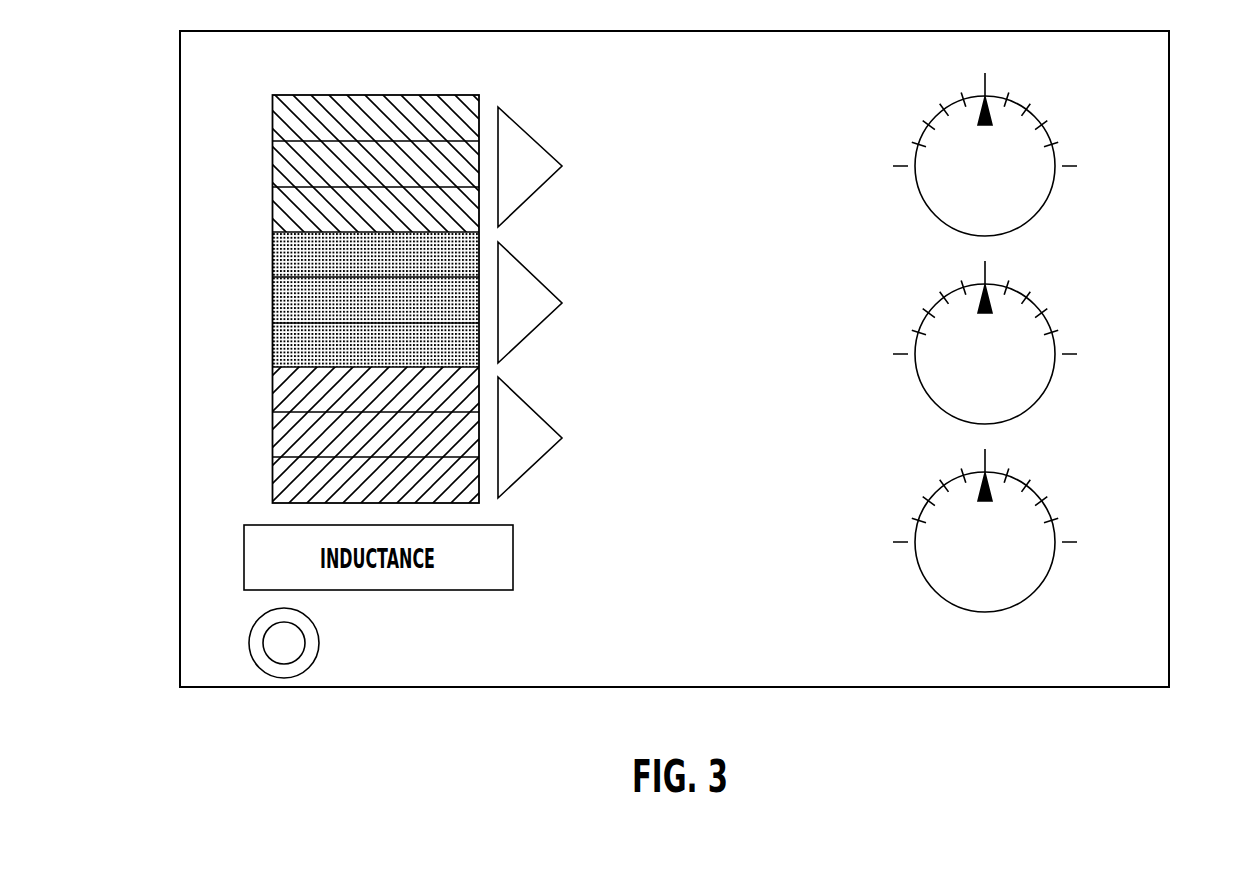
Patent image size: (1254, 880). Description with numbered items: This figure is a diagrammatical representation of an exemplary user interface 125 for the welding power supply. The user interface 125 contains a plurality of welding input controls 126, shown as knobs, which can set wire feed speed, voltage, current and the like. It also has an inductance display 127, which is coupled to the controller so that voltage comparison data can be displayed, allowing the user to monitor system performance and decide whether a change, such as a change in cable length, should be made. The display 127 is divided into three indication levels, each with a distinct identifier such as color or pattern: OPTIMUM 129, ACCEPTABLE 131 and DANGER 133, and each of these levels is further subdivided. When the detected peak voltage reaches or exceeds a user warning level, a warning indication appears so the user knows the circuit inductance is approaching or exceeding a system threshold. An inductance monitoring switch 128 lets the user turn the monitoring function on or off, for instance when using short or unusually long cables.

The user interface 125 is at (1169, 153).
The welding input controls 126 is at (1055, 368).
The inductance display 127 is at (282, 290).
The inductance monitoring switch 128 is at (278, 642).
The OPTIMUM indication level 129 is at (532, 466).
The ACCEPTABLE indication level 131 is at (532, 331).
The DANGER indication level 133 is at (532, 194).